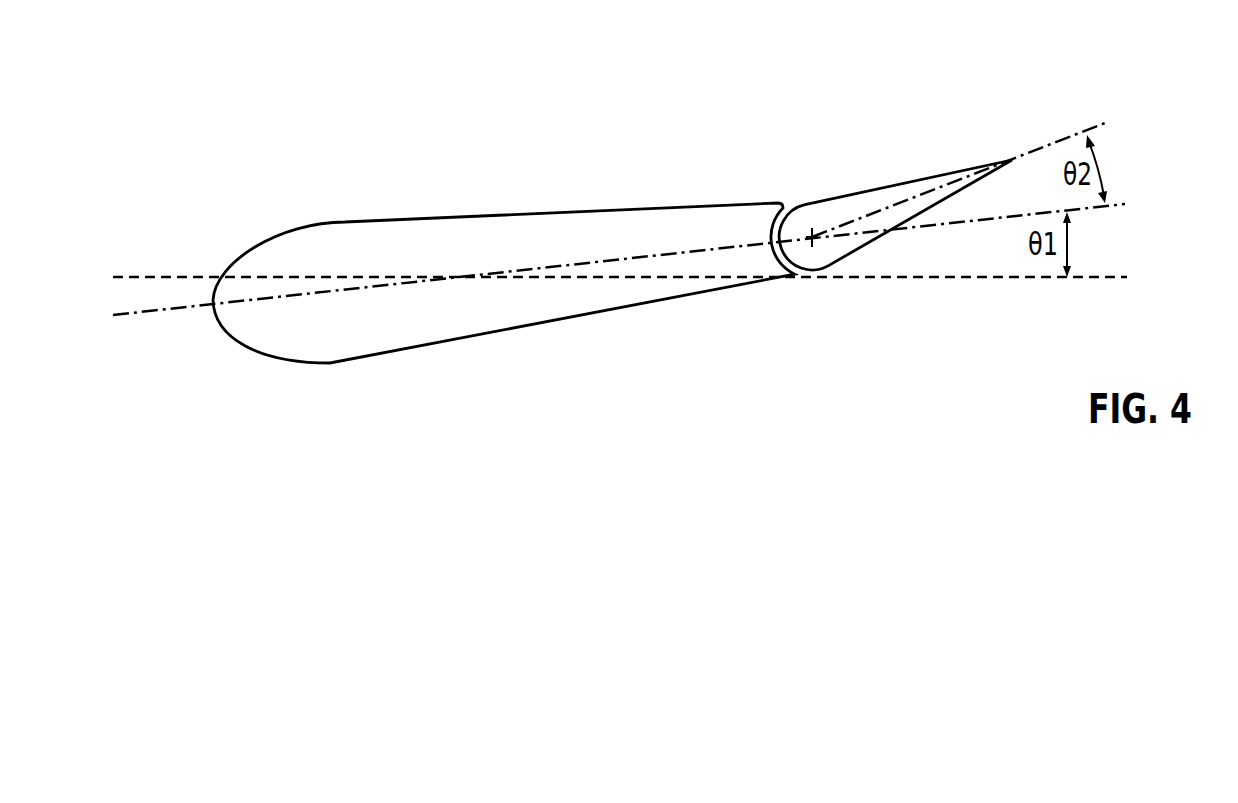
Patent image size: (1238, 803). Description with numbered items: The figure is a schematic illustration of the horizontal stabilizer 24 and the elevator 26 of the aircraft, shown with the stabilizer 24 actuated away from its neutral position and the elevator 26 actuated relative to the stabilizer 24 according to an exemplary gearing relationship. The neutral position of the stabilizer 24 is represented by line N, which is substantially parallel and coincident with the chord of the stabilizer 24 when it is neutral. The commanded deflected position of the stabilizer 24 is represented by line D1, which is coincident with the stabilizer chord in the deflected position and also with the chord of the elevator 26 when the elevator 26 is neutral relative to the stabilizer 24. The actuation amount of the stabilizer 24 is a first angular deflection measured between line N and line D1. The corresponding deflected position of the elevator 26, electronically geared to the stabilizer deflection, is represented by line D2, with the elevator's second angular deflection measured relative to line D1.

The stabilizer 24 is at (488, 228).
The elevator 26 is at (872, 205).
The line N is at (178, 277).
The line D1 is at (1097, 208).
The line D2 is at (1082, 135).